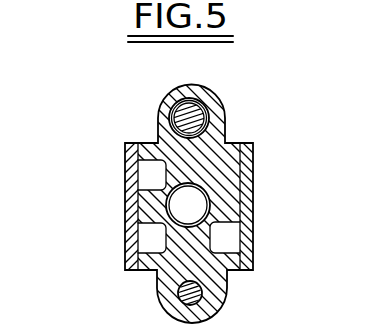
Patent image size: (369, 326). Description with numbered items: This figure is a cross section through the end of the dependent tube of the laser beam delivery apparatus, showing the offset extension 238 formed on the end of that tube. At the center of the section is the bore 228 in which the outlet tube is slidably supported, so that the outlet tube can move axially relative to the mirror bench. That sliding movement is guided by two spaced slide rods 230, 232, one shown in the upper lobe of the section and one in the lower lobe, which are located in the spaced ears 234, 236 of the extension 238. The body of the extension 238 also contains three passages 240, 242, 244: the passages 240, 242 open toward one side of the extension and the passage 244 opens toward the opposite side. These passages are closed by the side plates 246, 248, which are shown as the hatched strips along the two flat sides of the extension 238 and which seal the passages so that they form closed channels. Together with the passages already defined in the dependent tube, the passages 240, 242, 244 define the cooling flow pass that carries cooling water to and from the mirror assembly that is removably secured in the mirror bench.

The bore 228 is at (178, 198).
The slide rod 230 is at (193, 103).
The slide rod 232 is at (178, 294).
The ear 234 is at (203, 112).
The ear 236 is at (212, 288).
The extension 238 is at (240, 142).
The passage 240 is at (153, 165).
The passage 242 is at (145, 242).
The passage 244 is at (226, 228).
The side plate 246 is at (140, 180).
The side plate 248 is at (245, 182).